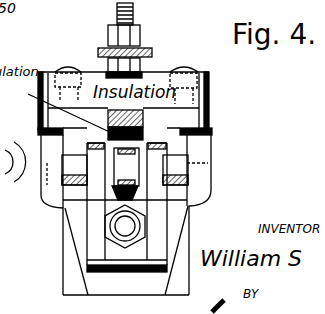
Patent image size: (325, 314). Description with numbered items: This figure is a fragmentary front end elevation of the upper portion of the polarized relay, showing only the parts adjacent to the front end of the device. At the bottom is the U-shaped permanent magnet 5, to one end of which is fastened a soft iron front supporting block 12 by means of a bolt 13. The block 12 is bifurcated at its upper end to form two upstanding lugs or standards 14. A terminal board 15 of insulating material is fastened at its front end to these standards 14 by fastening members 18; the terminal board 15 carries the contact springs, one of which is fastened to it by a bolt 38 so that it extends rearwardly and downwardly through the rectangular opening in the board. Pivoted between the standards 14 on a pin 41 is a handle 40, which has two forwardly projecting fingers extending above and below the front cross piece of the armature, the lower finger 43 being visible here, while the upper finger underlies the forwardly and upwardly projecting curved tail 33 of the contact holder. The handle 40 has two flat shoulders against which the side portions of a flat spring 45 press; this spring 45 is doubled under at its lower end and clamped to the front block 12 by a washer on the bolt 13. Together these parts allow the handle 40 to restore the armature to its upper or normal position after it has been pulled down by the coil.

The permanent magnet 5 is at (63, 290).
The front supporting block 12 is at (126, 287).
The bolt 13 is at (125, 226).
The standards 14 is at (42, 133).
The terminal board 15 is at (156, 72).
The terminal cap 18 is at (68, 67).
The tail 33 is at (138, 129).
The bolt 38 is at (140, 32).
The handle 40 is at (126, 167).
The pin 41 is at (58, 167).
The lower finger 43 is at (138, 193).
The flat spring 45 is at (125, 207).